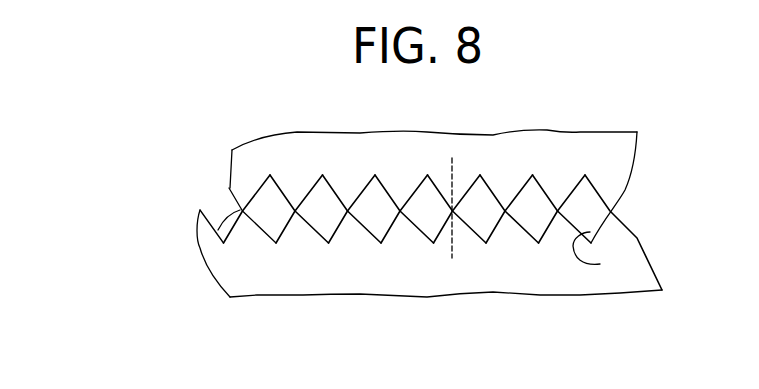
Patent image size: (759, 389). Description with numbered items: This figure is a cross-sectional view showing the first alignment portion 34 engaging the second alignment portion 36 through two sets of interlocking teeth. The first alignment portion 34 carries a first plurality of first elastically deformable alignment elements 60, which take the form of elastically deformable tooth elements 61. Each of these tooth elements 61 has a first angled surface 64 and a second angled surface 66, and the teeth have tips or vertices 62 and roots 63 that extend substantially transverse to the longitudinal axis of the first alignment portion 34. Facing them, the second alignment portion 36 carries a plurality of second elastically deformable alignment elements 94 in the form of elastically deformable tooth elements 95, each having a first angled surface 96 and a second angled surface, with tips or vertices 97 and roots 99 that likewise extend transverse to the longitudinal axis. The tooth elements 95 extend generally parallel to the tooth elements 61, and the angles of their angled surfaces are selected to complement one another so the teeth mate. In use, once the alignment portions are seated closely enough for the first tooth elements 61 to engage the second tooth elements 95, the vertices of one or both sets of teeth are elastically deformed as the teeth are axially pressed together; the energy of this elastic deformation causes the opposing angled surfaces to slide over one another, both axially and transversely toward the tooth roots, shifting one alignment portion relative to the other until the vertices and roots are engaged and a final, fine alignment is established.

The first alignment portion 34 is at (252, 133).
The second alignment portion 36 is at (320, 310).
The first elastically deformable alignment elements 60 is at (208, 202).
The elastically deformable tooth elements 61 is at (247, 189).
The vertices 62 is at (213, 268).
The roots 63 is at (428, 175).
The first angled surface 64 is at (312, 225).
The second angled surface 66 is at (392, 228).
The second elastically deformable alignment elements 94 is at (183, 230).
The elastically deformable tooth elements 95 is at (573, 235).
The first angled surface 96 is at (488, 236).
The vertices 97 is at (346, 211).
The roots 99 is at (262, 237).